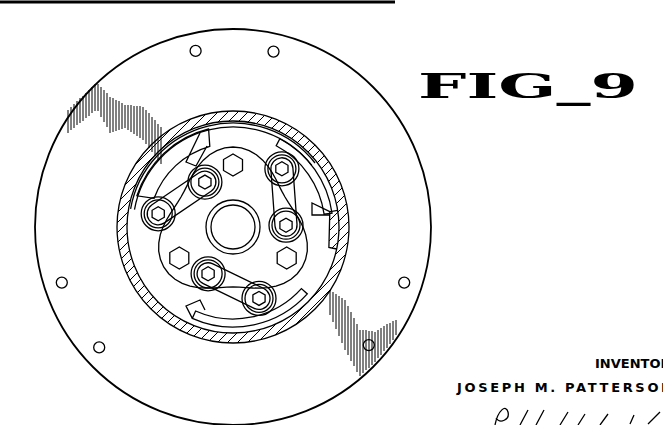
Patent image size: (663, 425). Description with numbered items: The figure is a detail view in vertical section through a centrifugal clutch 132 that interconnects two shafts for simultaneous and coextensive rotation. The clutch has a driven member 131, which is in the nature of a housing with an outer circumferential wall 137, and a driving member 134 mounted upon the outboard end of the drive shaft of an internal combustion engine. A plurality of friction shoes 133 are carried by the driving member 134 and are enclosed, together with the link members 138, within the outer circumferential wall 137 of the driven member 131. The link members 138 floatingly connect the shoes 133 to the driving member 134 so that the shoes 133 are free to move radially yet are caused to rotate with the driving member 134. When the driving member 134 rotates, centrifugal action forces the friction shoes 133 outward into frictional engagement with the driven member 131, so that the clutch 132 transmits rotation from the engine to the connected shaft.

The driven member 131 is at (348, 207).
The centrifugal clutch 132 is at (432, 178).
The friction shoes 133 is at (265, 130).
The driving member 134 is at (303, 247).
The outer circumferential wall 137 is at (121, 202).
The link members 138 is at (182, 196).